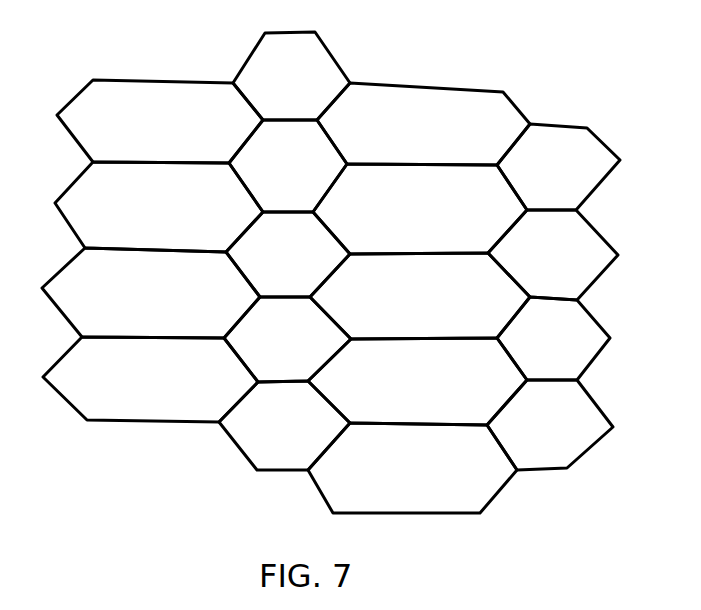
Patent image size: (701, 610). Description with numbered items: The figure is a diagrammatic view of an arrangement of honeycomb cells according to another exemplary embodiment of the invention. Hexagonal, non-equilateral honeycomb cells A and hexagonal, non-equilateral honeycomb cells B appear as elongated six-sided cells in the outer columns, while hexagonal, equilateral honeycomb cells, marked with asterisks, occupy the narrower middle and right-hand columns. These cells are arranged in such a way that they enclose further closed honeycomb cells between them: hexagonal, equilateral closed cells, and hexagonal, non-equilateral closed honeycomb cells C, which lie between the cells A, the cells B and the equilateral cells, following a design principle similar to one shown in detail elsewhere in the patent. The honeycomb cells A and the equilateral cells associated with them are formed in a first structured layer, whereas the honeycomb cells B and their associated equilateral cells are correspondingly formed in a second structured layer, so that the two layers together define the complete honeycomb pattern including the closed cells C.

The hexagonal, non-equilateral honeycomb cell A is at (286, 252).
The hexagonal, non-equilateral honeycomb cell B is at (286, 293).
The hexagonal, non-equilateral honeycomb cell C is at (291, 337).